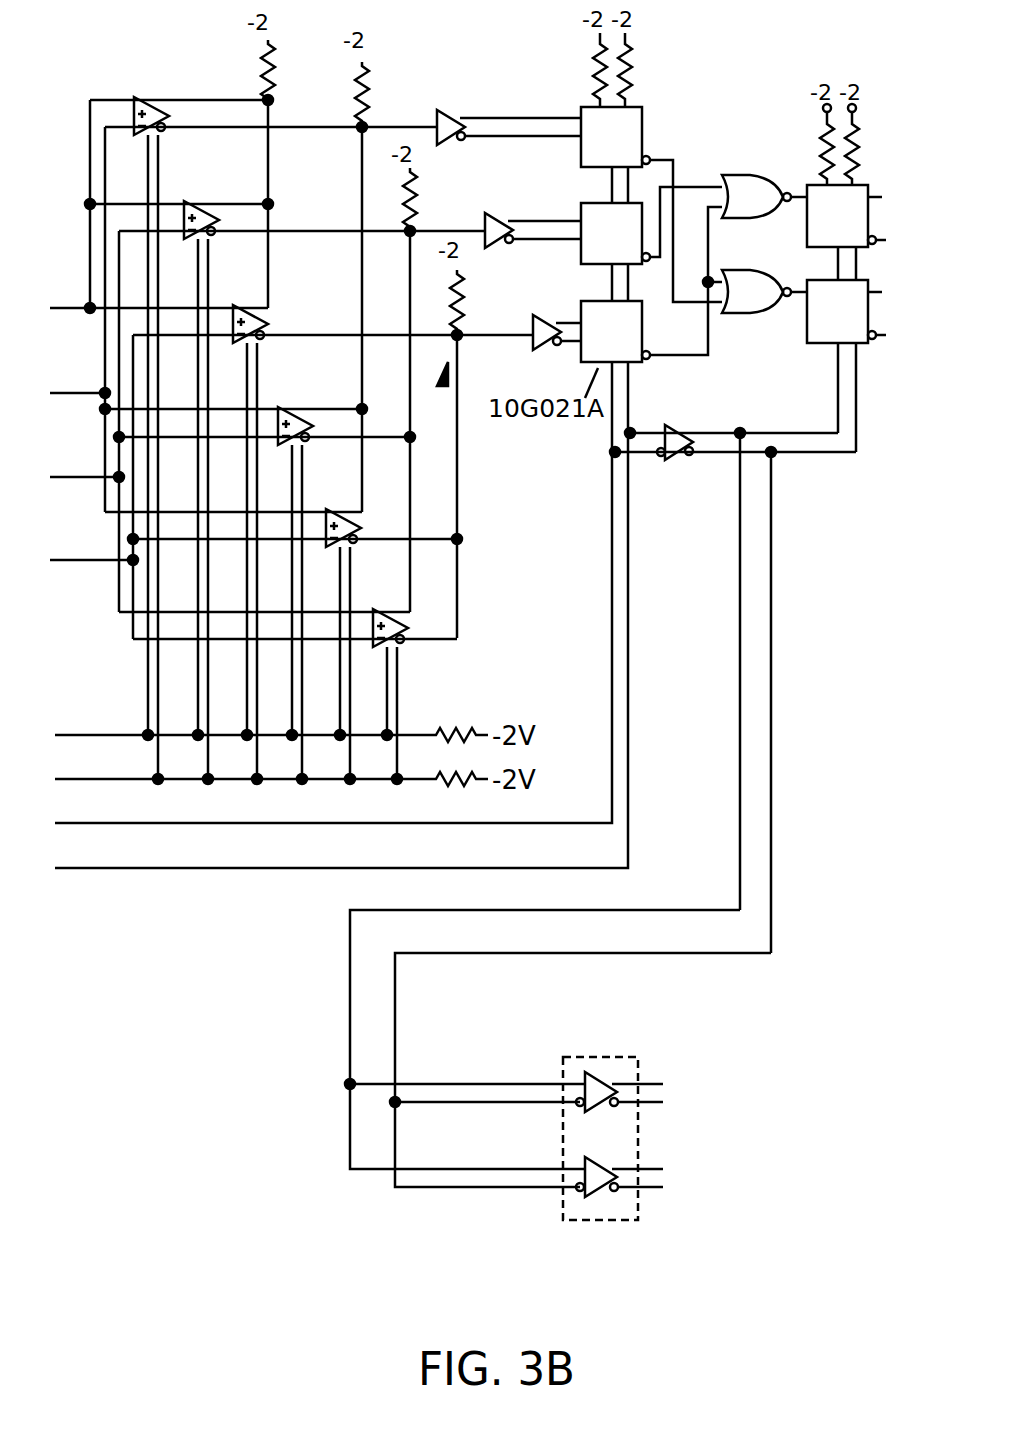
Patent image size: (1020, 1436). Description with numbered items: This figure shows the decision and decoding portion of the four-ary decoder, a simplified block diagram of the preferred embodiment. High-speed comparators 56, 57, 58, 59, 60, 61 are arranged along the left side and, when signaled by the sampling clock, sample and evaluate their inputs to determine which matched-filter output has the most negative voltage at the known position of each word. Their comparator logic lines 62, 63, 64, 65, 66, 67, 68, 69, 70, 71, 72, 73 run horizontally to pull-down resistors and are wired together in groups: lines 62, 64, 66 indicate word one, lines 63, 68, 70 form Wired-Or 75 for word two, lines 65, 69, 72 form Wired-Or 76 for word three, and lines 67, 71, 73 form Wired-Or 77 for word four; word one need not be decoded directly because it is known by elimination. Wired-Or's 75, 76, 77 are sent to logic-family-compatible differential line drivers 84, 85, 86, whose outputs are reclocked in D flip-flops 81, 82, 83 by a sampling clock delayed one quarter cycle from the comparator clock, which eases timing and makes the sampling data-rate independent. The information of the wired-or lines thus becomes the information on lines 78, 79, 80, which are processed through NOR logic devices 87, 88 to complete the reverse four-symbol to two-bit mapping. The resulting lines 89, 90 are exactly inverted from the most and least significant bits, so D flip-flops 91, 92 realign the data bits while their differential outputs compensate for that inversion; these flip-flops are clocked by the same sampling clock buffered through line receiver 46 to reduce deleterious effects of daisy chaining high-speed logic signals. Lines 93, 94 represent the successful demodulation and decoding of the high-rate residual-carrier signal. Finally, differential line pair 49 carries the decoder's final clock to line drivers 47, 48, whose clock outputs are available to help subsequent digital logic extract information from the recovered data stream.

The line receiver 46 is at (689, 503).
The line driver 47 is at (613, 1071).
The line driver 48 is at (582, 1205).
The differential line pair 49 is at (391, 1159).
The high-speed comparator 56 is at (140, 96).
The high-speed comparator 57 is at (190, 200).
The high-speed comparator 58 is at (240, 304).
The high-speed comparator 59 is at (285, 406).
The high-speed comparator 60 is at (333, 508).
The high-speed comparator 61 is at (382, 608).
The comparator logic line 62 is at (181, 87).
The comparator logic line 63 is at (233, 119).
The comparator logic line 64 is at (179, 191).
The comparator logic line 65 is at (264, 221).
The comparator logic line 66 is at (179, 295).
The comparator logic line 67 is at (295, 323).
The comparator logic line 68 is at (233, 397).
The comparator logic line 69 is at (264, 426).
The comparator logic line 70 is at (252, 498).
The comparator logic line 71 is at (295, 528).
The comparator logic line 72 is at (285, 598).
The comparator logic line 73 is at (295, 628).
The Wired-Or 75 is at (434, 126).
The Wired-Or 76 is at (481, 229).
The Wired-Or 77 is at (528, 333).
The line 78 is at (650, 155).
The line 79 is at (650, 262).
The line 80 is at (650, 360).
The D flip-flop 81 is at (584, 105).
The D flip-flop 82 is at (585, 201).
The D flip-flop 83 is at (585, 299).
The differential line driver 84 is at (441, 108).
The differential line driver 85 is at (489, 211).
The differential line driver 86 is at (538, 313).
The NOR logic device 87 is at (762, 210).
The NOR logic device 88 is at (762, 305).
The line 89 is at (788, 182).
The line 90 is at (788, 278).
The D flip-flop 91 is at (864, 184).
The D flip-flop 92 is at (864, 279).
The line 93 is at (892, 197).
The line 94 is at (892, 292).